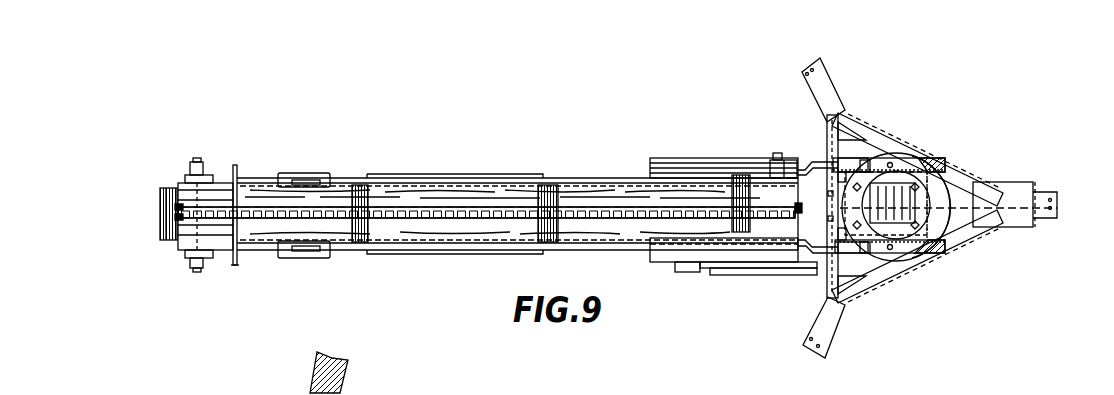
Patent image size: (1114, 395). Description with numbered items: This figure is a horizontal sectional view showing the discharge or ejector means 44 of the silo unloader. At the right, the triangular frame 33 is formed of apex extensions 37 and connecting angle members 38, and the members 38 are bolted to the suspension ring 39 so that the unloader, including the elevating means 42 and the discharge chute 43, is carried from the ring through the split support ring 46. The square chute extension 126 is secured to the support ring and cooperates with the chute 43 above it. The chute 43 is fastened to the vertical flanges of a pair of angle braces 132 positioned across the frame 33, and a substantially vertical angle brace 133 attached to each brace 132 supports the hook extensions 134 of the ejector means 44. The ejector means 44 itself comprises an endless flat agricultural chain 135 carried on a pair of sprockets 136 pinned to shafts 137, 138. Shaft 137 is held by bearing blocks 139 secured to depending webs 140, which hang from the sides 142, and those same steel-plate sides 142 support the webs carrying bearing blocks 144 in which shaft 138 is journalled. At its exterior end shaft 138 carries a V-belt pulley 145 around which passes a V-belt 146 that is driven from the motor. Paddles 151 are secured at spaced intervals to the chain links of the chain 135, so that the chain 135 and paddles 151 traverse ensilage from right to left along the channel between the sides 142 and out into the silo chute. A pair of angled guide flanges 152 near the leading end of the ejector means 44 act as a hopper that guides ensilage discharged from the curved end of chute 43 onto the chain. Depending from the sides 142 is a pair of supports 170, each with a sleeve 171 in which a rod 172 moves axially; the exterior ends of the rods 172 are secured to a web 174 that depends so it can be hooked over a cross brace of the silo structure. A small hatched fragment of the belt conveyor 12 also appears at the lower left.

The belt conveyor 12 is at (348, 386).
The frame 33 is at (875, 118).
The apex extensions 37 is at (830, 78).
The connecting angle members 38 is at (897, 157).
The suspension ring 39 is at (976, 186).
The elevating means 42 is at (1036, 180).
The discharge chute 43 is at (945, 186).
The ejector means 44 is at (583, 170).
The split support ring 46 is at (840, 208).
The square chute extension 126 is at (890, 266).
The angle braces 132 is at (918, 166).
The vertical angle brace 133 is at (866, 160).
The hook extensions 134 is at (815, 164).
The endless flat agricultural chain 135 is at (470, 208).
The sprockets 136 is at (160, 216).
The shaft 137 is at (197, 273).
The shaft 138 is at (828, 281).
The bearing blocks 139 is at (208, 163).
The depending webs 140 is at (224, 180).
The sides 142 is at (415, 180).
The bearing blocks 144 is at (772, 163).
The V-belt pulley 145 is at (750, 269).
The V-belt 146 is at (710, 272).
The paddles 151 is at (160, 235).
The angled guide flanges 152 is at (665, 160).
The supports 170 is at (318, 176).
The sleeve 171 is at (296, 173).
The rod 172 is at (455, 176).
The web 174 is at (236, 266).